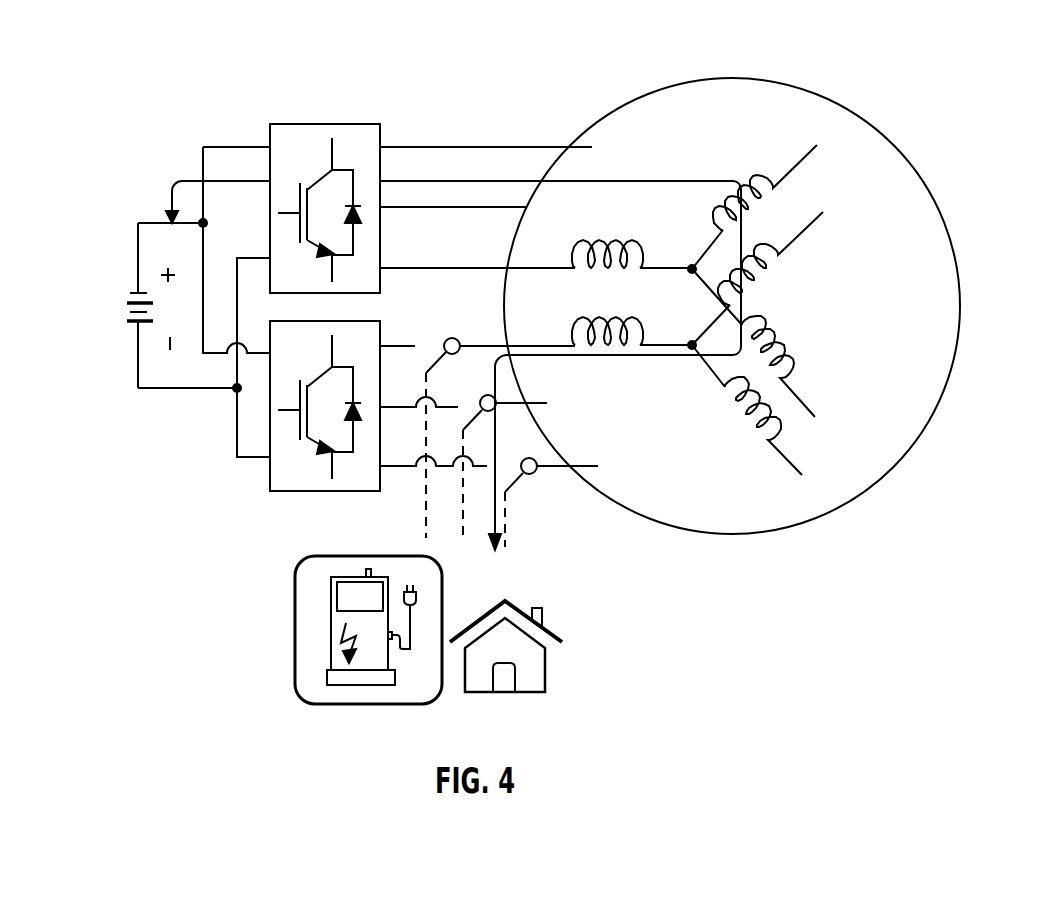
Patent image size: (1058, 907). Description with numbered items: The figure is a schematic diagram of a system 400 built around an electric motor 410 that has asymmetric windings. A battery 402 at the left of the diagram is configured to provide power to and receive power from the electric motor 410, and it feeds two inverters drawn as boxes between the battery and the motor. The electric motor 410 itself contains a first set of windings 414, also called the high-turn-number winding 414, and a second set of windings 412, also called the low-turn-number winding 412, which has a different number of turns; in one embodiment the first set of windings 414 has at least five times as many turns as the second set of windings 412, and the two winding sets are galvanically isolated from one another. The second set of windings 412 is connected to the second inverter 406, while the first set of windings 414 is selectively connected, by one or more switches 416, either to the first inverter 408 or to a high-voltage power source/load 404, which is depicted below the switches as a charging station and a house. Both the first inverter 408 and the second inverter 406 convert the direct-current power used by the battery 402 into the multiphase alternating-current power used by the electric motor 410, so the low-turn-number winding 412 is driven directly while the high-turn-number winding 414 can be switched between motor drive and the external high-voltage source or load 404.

The system 400 is at (140, 63).
The battery 402 is at (126, 288).
The high-voltage power source/load 404 is at (295, 632).
The second inverter 406 is at (287, 123).
The first inverter 408 is at (300, 492).
The electric motor 410 is at (732, 271).
The second set of windings 412 is at (797, 163).
The first set of windings 414 is at (787, 455).
The switches 416 is at (517, 485).